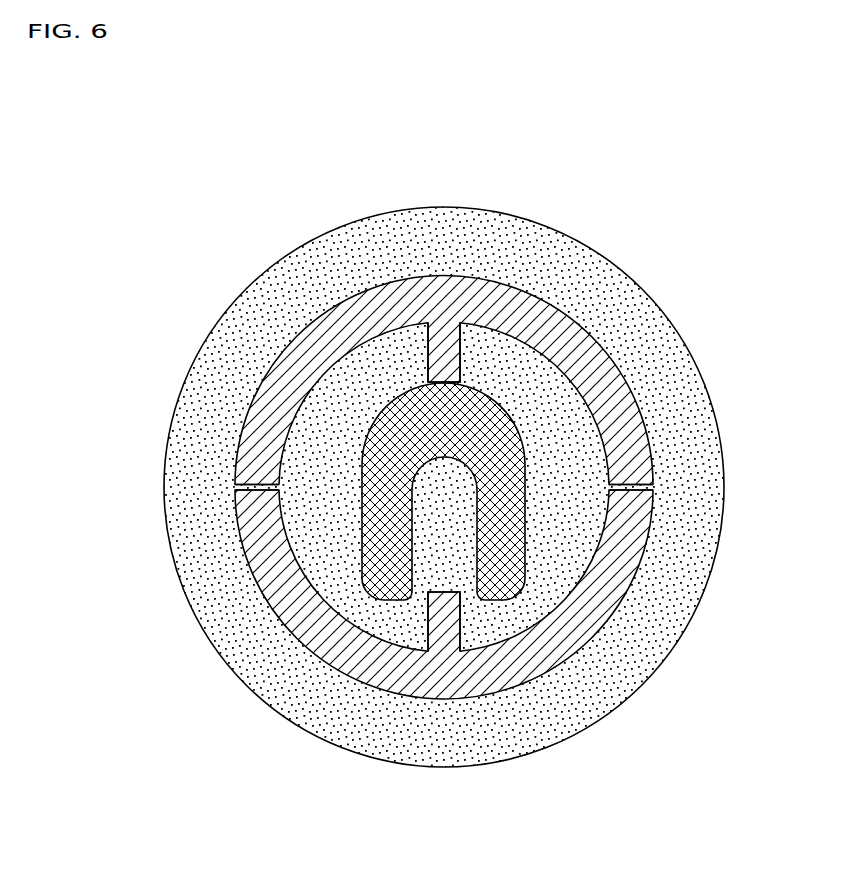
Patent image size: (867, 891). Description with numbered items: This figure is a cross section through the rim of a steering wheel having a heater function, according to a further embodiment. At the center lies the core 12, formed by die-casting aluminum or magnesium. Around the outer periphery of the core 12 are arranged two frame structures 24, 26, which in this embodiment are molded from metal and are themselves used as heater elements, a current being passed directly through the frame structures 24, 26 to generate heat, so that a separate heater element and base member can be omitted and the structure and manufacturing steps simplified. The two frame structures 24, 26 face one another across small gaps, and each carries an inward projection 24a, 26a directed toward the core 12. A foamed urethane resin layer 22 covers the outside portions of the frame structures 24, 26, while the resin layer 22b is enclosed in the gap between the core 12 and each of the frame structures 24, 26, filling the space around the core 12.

The core 12 is at (373, 550).
The resin layer 22 is at (677, 397).
The resin layer 22b is at (310, 443).
The frame structure 24 is at (283, 370).
The projection of frame structure 24a is at (463, 350).
The frame structure 26 is at (577, 638).
The projection of frame structure 26a is at (428, 620).